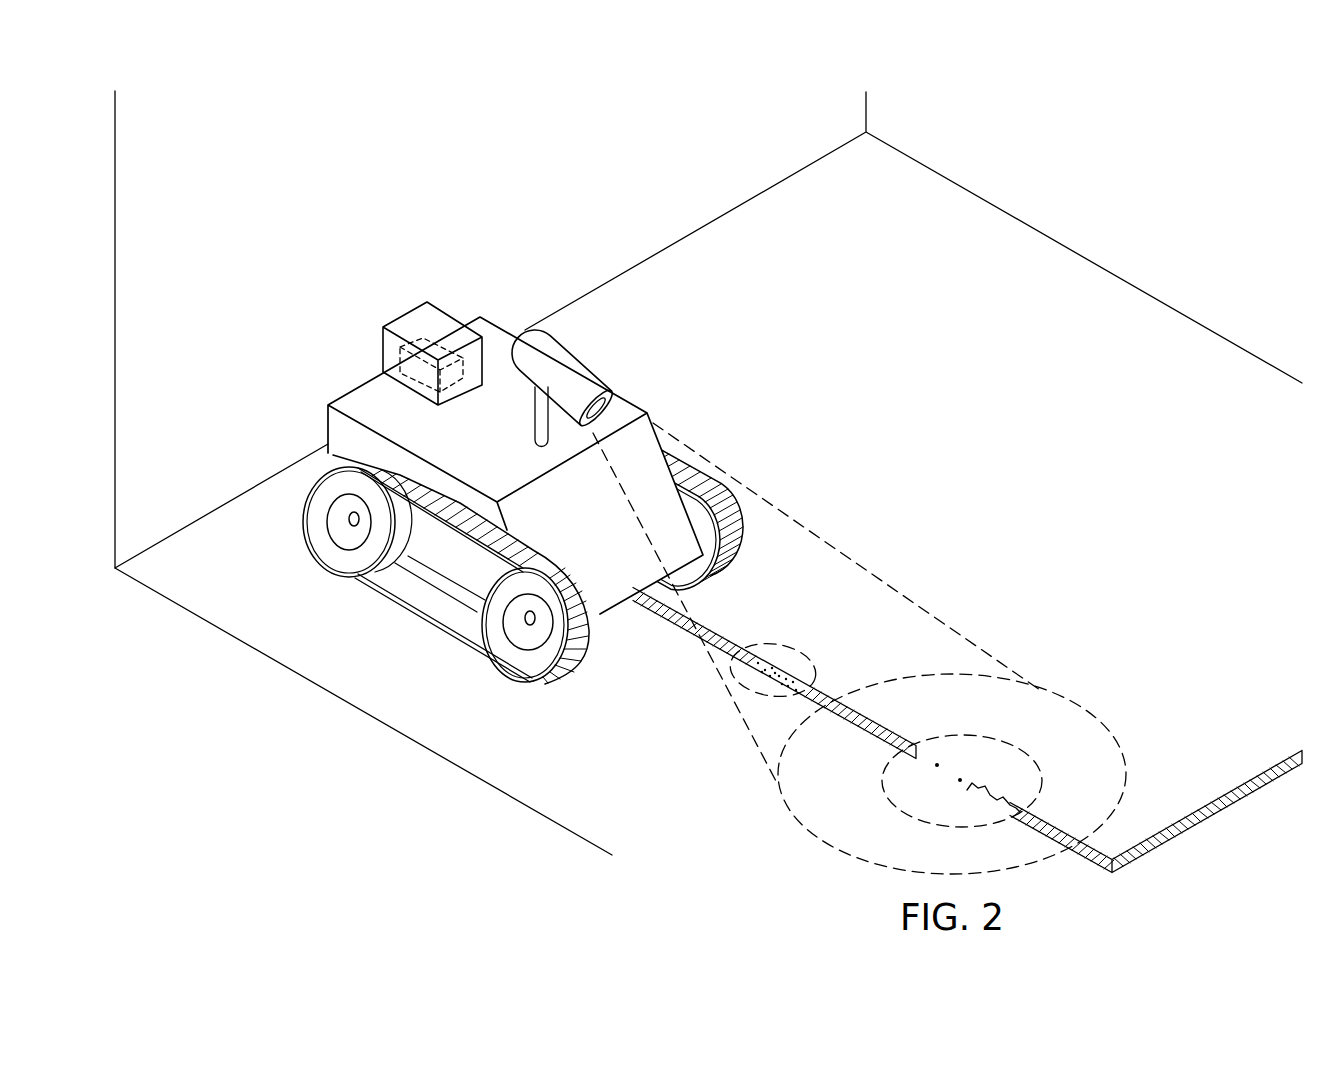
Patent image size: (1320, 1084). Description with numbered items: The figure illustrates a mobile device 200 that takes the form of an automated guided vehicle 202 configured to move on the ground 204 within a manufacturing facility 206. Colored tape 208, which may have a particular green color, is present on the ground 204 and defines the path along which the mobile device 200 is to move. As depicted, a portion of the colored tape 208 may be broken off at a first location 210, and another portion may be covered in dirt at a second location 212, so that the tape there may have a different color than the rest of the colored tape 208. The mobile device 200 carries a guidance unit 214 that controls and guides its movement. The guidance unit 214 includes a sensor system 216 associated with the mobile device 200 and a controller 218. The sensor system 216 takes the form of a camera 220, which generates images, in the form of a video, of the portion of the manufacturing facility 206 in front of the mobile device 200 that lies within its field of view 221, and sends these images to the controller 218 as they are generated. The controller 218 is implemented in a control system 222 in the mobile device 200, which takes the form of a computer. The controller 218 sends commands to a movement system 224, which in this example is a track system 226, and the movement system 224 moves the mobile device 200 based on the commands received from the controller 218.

The mobile device 200 is at (500, 477).
The automated guided vehicle 202 is at (326, 431).
The ground 204 is at (872, 305).
The manufacturing facility 206 is at (1080, 195).
The colored tape 208 is at (967, 730).
The first location 210 is at (950, 735).
The second location 212 is at (798, 652).
The guidance unit 214 is at (594, 360).
The sensor system 216 is at (602, 370).
The controller 218 is at (437, 345).
The camera 220 is at (528, 378).
The field of view 221 is at (1093, 718).
The control system 222 is at (402, 305).
The movement system 224 is at (446, 593).
The track system 226 is at (567, 670).